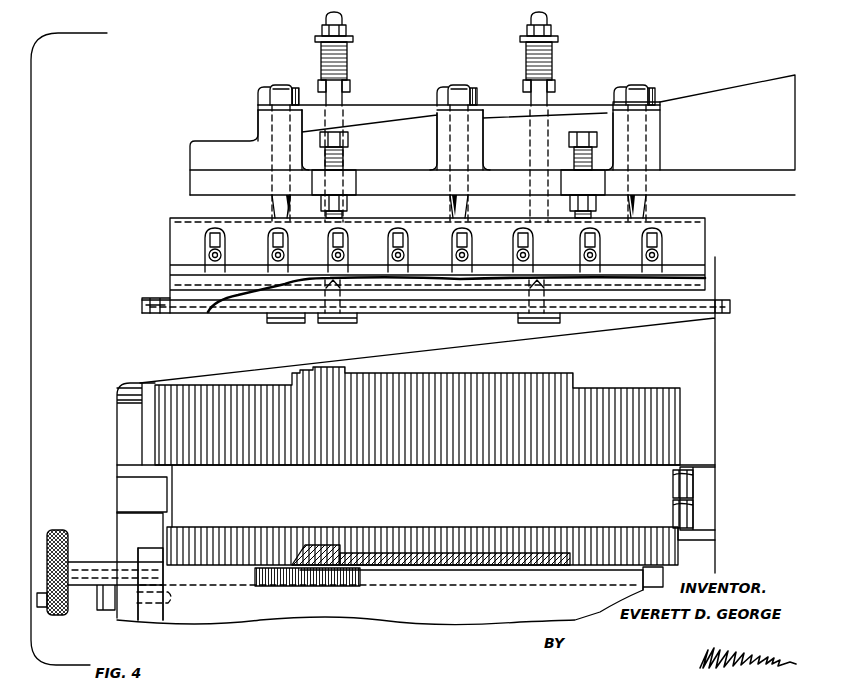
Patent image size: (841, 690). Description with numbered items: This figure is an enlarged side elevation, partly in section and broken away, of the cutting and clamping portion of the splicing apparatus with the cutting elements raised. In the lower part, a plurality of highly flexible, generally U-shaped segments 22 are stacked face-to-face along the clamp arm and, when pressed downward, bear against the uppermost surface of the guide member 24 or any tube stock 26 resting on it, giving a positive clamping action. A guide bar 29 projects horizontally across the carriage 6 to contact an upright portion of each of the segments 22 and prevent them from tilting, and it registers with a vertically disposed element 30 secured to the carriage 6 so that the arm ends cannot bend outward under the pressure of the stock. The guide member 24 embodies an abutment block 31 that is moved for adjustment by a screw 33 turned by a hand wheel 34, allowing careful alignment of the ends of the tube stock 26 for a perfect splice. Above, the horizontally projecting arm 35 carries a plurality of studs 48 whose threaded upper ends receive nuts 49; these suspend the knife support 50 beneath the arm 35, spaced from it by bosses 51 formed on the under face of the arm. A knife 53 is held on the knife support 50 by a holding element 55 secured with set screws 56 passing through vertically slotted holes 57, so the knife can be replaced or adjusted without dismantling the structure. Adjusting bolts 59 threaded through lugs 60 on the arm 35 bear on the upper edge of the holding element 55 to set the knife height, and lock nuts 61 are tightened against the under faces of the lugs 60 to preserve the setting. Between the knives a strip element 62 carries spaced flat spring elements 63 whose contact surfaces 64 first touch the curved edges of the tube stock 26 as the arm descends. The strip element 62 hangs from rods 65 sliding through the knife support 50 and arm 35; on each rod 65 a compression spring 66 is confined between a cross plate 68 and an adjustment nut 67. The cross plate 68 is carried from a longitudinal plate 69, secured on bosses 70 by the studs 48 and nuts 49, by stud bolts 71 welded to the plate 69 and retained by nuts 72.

The carriage 6 is at (452, 610).
The segments 22 is at (613, 397).
The guide member 24 is at (82, 562).
The tube stock 26 is at (477, 550).
The guide bar 29 is at (657, 478).
The vertically disposed element 30 is at (125, 608).
The abutment block 31 is at (332, 548).
The screw 33 is at (275, 588).
The hand wheel 34 is at (55, 530).
The arm 35 is at (221, 154).
The studs 48 is at (280, 85).
The nuts 49 is at (263, 95).
The knife support 50 is at (715, 288).
The bosses 51 is at (275, 208).
The knife 53 is at (706, 276).
The holding element 55 is at (172, 240).
The set screws 56 is at (282, 254).
The vertically slotted holes 57 is at (398, 257).
The adjusting bolts 59 is at (347, 152).
The lugs 60 is at (565, 183).
The lock nuts 61 is at (342, 200).
The strip element 62 is at (143, 303).
The flat spring elements 63 is at (290, 318).
The contact surfaces 64 is at (284, 322).
The rods 65 is at (336, 123).
The compression spring 66 is at (347, 55).
The adjustment nut 67 is at (350, 86).
The cross plate 68 is at (345, 38).
The plate 69 is at (420, 107).
The bosses 70 is at (263, 133).
The stud bolts 71 is at (326, 70).
The nuts 72 is at (544, 28).